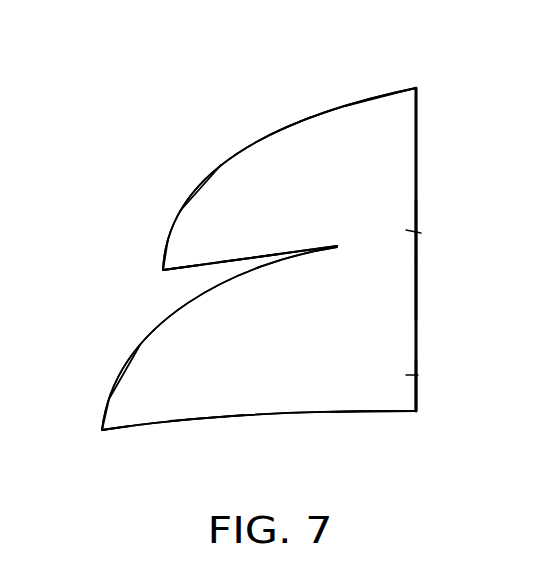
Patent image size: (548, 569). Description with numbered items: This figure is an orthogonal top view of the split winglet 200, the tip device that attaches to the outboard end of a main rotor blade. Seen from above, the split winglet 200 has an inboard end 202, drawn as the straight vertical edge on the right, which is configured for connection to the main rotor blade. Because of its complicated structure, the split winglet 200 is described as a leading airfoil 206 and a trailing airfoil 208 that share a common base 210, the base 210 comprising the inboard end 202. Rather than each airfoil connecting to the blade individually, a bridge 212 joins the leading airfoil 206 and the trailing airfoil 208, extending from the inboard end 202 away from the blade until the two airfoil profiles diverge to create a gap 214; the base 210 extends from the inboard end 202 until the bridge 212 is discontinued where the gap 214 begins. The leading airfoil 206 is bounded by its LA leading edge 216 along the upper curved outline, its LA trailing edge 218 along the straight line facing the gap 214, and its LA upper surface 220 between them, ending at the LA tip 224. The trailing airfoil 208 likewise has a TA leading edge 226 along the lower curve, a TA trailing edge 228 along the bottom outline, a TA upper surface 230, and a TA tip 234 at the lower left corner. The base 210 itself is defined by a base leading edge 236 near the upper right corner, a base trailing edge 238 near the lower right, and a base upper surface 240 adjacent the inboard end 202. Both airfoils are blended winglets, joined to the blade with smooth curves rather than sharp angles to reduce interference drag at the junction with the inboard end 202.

The split winglet 200 is at (137, 76).
The inboard end 202 is at (419, 154).
The leading airfoil 206 is at (248, 146).
The trailing airfoil 208 is at (281, 414).
The base 210 is at (420, 287).
The bridge 212 is at (420, 232).
The gap 214 is at (267, 255).
The LA leading edge 216 is at (295, 127).
The LA trailing edge 218 is at (241, 264).
The LA upper surface 220 is at (230, 182).
The LA tip 224 is at (160, 274).
The TA leading edge 226 is at (133, 357).
The TA trailing edge 228 is at (205, 416).
The TA upper surface 230 is at (125, 393).
The TA tip 234 is at (102, 432).
The base leading edge 236 is at (378, 95).
The base trailing edge 238 is at (357, 414).
The base upper surface 240 is at (421, 375).